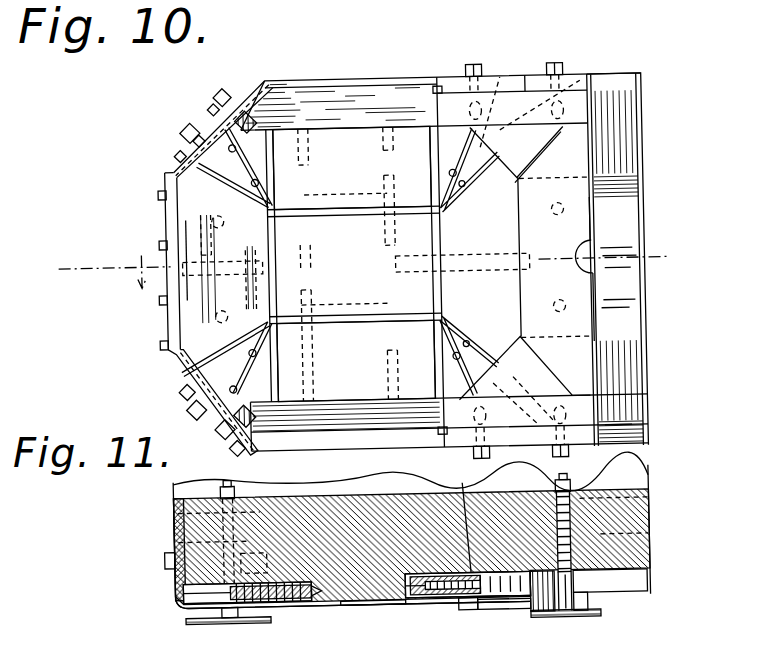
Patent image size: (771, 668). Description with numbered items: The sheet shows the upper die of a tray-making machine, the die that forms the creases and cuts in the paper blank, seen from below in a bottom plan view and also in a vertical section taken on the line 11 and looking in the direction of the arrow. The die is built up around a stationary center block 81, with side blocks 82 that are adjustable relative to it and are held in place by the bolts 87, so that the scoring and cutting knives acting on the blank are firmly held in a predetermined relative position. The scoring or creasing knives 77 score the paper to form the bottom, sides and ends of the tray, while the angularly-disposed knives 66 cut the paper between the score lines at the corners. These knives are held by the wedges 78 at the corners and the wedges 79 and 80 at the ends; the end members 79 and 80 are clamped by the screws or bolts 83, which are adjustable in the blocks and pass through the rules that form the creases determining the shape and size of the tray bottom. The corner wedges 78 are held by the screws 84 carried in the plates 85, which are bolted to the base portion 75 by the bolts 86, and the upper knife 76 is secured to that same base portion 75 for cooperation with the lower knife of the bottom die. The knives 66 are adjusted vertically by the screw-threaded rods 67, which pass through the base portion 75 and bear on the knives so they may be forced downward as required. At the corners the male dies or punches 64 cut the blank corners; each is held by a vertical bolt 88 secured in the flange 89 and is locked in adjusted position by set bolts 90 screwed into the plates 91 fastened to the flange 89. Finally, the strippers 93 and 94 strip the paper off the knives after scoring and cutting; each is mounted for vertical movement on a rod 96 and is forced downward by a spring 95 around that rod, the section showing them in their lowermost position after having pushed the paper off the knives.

In FIG. 10, the section line 11 is at (379, 267).
In FIG. 10, the male die or punch 64 is at (557, 166).
In FIG. 11, the male die or punch 64 is at (514, 612).
In FIG. 10, the angularly-disposed knife 66 is at (278, 195).
In FIG. 10, the rod 67 is at (448, 97).
In FIG. 11, the base portion 75 is at (375, 516).
In FIG. 10, the upper knife 76 is at (179, 321).
In FIG. 11, the upper knife 76 is at (185, 582).
In FIG. 10, the scoring or creasing knife 77 is at (239, 199).
In FIG. 11, the scoring or creasing knife 77 is at (282, 616).
In FIG. 10, the wedge 78 is at (480, 354).
In FIG. 11, the wedge 79 is at (192, 619).
In FIG. 10, the wedge 80 is at (512, 164).
In FIG. 11, the wedge 80 is at (450, 517).
In FIG. 10, the center block 81 is at (354, 239).
In FIG. 11, the center block 81 is at (367, 604).
In FIG. 10, the side block 82 is at (354, 263).
In FIG. 10, the screw or bolt 83 is at (462, 274).
In FIG. 11, the screw or bolt 83 is at (254, 626).
In FIG. 10, the screw 84 is at (196, 138).
In FIG. 10, the plate 85 is at (257, 86).
In FIG. 10, the bolt 86 is at (228, 112).
In FIG. 10, the bolt 87 is at (345, 248).
In FIG. 10, the vertical bolt 88 is at (489, 109).
In FIG. 10, the flange 89 is at (347, 114).
In FIG. 10, the set bolt 90 is at (484, 73).
In FIG. 10, the plate 91 is at (533, 87).
In FIG. 10, the stripper 93 is at (597, 265).
In FIG. 11, the stripper 93 is at (594, 619).
In FIG. 10, the stripper 94 is at (194, 234).
In FIG. 11, the stripper 94 is at (224, 629).
In FIG. 10, the spring 95 is at (610, 227).
In FIG. 11, the spring 95 is at (182, 549).
In FIG. 10, the rod 96 is at (566, 214).
In FIG. 11, the rod 96 is at (184, 519).